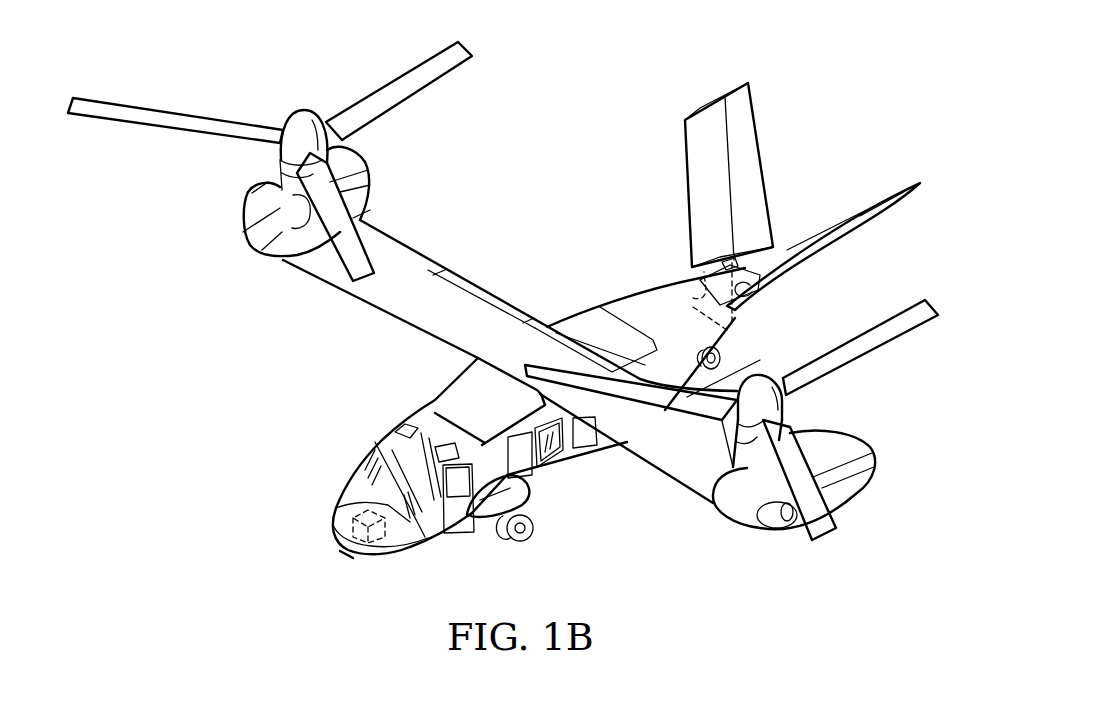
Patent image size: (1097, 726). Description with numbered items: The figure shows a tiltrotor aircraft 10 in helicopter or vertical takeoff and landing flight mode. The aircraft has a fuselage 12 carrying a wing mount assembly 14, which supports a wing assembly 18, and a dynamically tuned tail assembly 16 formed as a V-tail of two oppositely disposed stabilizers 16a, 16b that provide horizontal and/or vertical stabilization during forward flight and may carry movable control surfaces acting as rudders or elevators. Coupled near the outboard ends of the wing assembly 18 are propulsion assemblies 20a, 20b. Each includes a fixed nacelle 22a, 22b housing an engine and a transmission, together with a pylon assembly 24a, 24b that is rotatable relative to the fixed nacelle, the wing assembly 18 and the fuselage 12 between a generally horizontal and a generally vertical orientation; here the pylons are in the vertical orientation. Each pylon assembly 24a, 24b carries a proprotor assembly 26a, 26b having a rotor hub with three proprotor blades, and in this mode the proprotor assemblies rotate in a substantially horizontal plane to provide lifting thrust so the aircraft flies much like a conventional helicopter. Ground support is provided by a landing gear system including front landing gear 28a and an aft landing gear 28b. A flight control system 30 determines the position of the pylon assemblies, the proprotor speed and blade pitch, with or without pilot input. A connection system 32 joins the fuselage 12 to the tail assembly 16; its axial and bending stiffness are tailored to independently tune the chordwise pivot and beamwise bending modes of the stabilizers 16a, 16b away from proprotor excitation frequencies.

The tiltrotor aircraft 10 is at (610, 106).
The fuselage 12 is at (636, 305).
The wing mount assembly 14 is at (585, 326).
The dynamically tuned tail assembly 16 is at (768, 186).
The stabilizer 16a is at (840, 243).
The stabilizer 16b is at (747, 128).
The wing assembly 18 is at (474, 312).
The propulsion assembly 20a is at (855, 501).
The propulsion assembly 20b is at (376, 190).
The fixed nacelle 22a is at (857, 448).
The fixed nacelle 22b is at (368, 165).
The pylon assembly 24a is at (740, 466).
The pylon assembly 24b is at (263, 253).
The proprotor assembly 26a is at (916, 330).
The proprotor assembly 26b is at (298, 111).
The front landing gear 28a is at (527, 543).
The aft landing gear 28b is at (728, 360).
The flight control system 30 is at (346, 516).
The connection system 32 is at (693, 298).